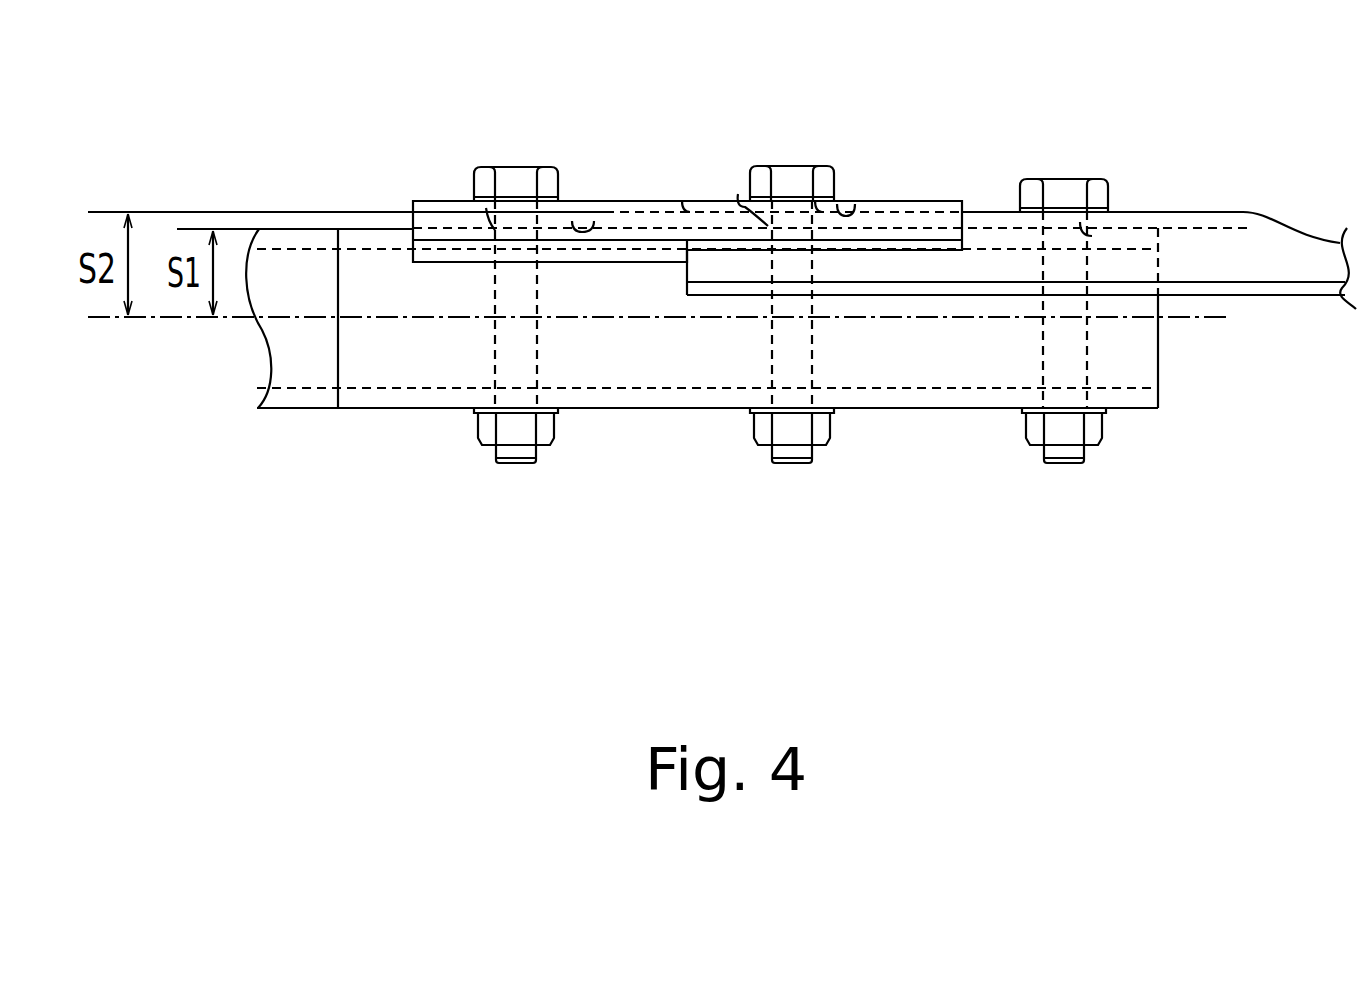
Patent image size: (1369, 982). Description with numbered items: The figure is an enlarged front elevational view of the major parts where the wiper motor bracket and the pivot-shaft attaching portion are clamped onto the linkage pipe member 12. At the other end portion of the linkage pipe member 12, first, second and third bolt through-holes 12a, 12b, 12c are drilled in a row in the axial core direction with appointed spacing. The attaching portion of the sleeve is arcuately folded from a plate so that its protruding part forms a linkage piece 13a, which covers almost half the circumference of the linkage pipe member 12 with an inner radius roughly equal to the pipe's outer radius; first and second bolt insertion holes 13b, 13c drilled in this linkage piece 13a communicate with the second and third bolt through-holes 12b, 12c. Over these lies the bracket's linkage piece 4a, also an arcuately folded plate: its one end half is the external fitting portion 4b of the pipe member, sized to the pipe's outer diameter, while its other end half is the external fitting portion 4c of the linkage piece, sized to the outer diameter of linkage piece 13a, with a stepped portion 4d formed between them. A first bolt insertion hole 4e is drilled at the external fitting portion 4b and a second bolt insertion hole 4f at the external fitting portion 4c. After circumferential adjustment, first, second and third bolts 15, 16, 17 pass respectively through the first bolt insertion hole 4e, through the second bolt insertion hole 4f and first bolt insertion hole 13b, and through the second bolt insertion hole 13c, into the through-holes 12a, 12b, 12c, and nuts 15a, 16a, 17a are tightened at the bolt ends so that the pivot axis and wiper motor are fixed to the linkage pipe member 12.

The linkage piece 4a is at (643, 202).
The external fitting portion of the pipe member 4b is at (594, 221).
The external fitting portion of the linkage piece 4c is at (846, 216).
The stepped portion 4d is at (682, 201).
The first bolt insertion hole 4e is at (486, 208).
The second bolt insertion hole 4f is at (815, 200).
The linkage pipe member 12 is at (927, 370).
The first bolt through-hole 12a is at (495, 238).
The second bolt through-hole 12b is at (822, 236).
The third bolt through-hole 12c is at (1040, 240).
The linkage piece 13a is at (1132, 265).
The first bolt insertion hole 13b is at (738, 194).
The second bolt insertion hole 13c is at (1103, 230).
The first bolt 15 is at (515, 182).
The nut 15a is at (495, 438).
The second bolt 16 is at (793, 182).
The nut 16a is at (817, 427).
The third bolt 17 is at (1067, 190).
The nut 17a is at (1042, 430).